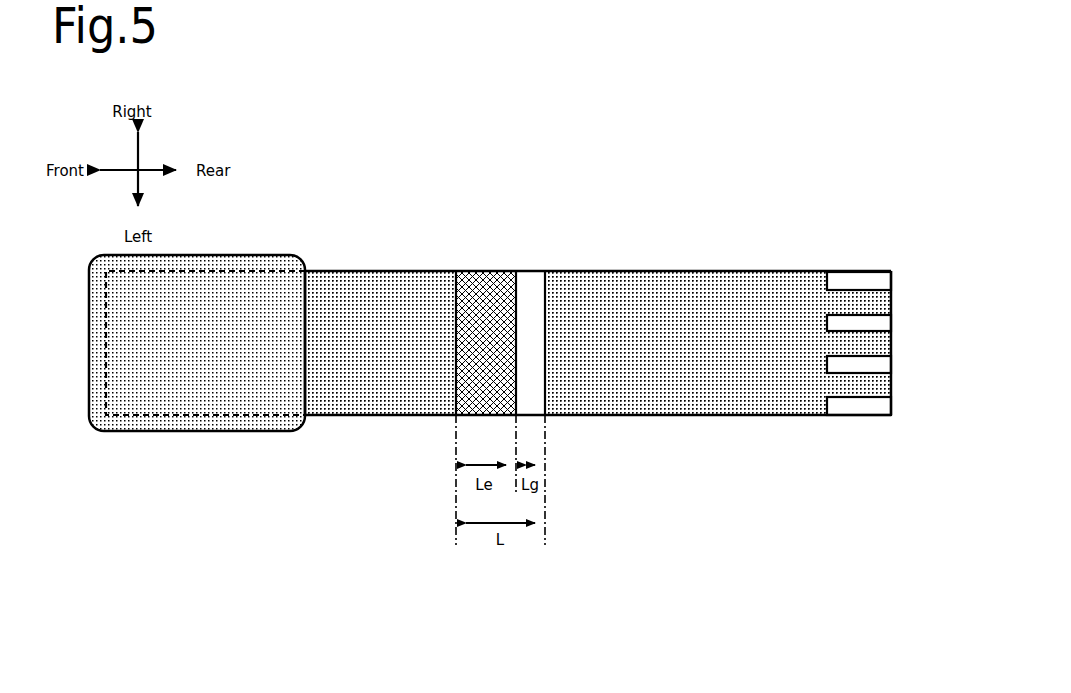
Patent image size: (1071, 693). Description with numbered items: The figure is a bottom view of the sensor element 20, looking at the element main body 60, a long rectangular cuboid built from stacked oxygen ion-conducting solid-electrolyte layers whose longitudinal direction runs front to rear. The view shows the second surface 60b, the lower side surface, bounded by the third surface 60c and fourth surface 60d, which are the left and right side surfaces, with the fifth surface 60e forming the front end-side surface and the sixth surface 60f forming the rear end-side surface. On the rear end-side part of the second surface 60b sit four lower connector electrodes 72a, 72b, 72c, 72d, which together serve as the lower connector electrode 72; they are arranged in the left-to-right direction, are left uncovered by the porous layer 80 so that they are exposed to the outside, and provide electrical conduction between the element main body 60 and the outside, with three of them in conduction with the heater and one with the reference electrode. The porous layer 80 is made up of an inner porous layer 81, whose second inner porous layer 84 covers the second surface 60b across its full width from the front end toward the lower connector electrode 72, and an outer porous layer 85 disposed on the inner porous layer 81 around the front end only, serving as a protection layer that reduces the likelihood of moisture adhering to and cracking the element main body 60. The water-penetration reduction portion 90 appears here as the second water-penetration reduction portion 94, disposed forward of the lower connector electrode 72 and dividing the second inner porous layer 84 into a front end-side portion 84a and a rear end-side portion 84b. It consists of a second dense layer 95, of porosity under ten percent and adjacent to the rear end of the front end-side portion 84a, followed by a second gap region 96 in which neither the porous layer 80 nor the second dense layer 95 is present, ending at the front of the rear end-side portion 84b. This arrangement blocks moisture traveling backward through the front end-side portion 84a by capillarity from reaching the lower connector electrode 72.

The sensor element 20 is at (490, 291).
The element main body 60 is at (627, 307).
The second surface 60b is at (538, 399).
The third surface 60c is at (675, 415).
The fourth surface 60d is at (668, 271).
The fifth surface 60e is at (105, 358).
The sixth surface 60f is at (892, 346).
The lower connector electrode 72 is at (885, 309).
The lower connector electrode 72a is at (892, 405).
The lower connector electrode 72b is at (892, 368).
The lower connector electrode 72c is at (892, 325).
The lower connector electrode 72d is at (892, 283).
The porous layer 80 is at (188, 264).
The inner porous layer 81 is at (317, 273).
The second inner porous layer 84 is at (598, 292).
The front end-side portion 84a is at (418, 271).
The rear end-side portion 84b is at (612, 271).
The outer porous layer 85 is at (262, 271).
The water-penetration reduction portion 90 is at (493, 273).
The second water-penetration reduction portion 94 is at (500, 297).
The second dense layer 95 is at (492, 271).
The second gap region 96 is at (528, 313).